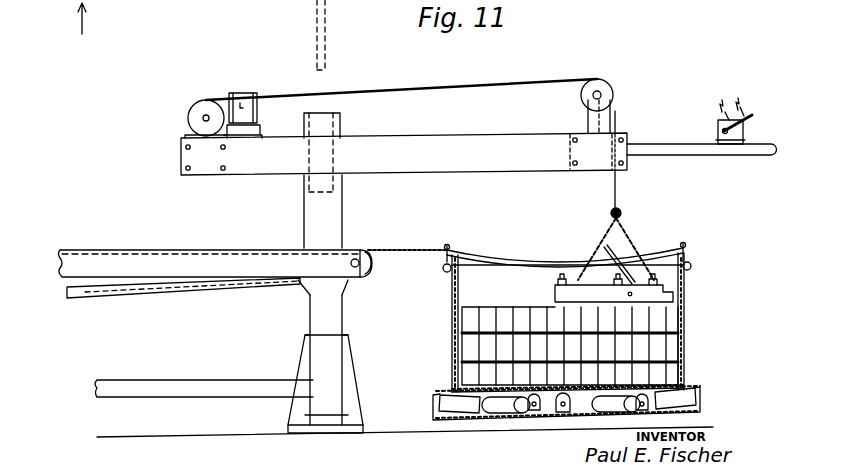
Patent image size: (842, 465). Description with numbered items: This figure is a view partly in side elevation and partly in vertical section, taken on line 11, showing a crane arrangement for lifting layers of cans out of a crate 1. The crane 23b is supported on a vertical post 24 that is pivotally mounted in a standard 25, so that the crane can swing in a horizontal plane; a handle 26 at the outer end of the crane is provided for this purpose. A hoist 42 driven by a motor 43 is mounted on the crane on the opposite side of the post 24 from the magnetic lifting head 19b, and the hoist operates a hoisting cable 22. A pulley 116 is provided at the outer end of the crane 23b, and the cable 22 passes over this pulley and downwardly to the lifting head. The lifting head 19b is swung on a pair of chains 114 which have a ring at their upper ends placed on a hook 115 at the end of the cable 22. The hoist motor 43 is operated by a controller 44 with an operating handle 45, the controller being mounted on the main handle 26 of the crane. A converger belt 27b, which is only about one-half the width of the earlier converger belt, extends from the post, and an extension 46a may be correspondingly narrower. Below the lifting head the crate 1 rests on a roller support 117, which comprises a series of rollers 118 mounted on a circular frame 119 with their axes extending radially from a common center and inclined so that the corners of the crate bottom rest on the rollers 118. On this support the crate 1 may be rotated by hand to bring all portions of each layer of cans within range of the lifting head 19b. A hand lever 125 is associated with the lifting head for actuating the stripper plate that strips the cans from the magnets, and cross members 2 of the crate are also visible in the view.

The section line 11 is at (94, 18).
The crate 1 is at (682, 295).
The basket cross bars 2 is at (688, 363).
The lifting head 19b is at (692, 275).
The hoisting cable 22 is at (486, 82).
The crane 23b is at (460, 126).
The post 24 is at (337, 184).
The standard 25 is at (348, 350).
The handle 26 is at (762, 155).
The converger belt 27b is at (204, 250).
The hoist 42 is at (188, 110).
The motor 43 is at (244, 86).
The controller 44 is at (718, 128).
The operating handle 45 is at (755, 116).
The extension 46a is at (425, 248).
The chains 114 is at (605, 232).
The hook 115 is at (622, 213).
The pulley 116 is at (582, 92).
The roller support 117 is at (702, 397).
The rollers 118 is at (500, 410).
The circular frame 119 is at (552, 420).
The hand lever 125 is at (613, 245).